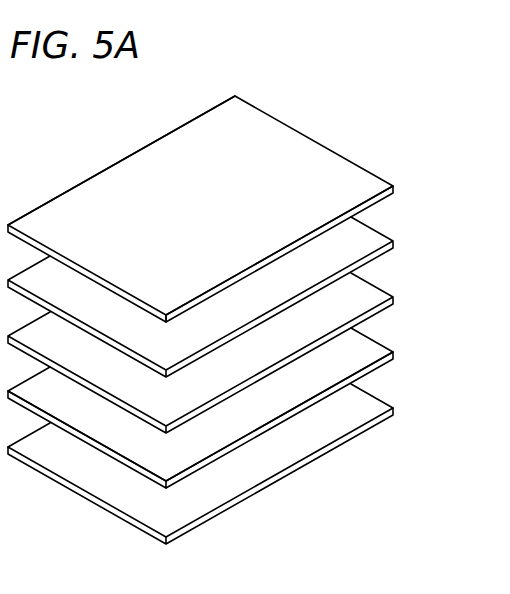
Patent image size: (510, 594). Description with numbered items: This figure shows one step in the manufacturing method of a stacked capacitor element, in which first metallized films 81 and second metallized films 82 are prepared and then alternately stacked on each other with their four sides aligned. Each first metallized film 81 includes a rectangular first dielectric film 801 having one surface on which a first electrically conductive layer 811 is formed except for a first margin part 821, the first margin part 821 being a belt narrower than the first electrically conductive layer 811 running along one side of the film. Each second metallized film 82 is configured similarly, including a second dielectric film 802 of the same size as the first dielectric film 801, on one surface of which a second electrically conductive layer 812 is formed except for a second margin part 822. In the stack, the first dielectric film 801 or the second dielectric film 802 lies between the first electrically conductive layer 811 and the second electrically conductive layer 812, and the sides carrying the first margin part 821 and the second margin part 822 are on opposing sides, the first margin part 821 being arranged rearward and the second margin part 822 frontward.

The first metallized film 81 is at (222, 310).
The second metallized film 82 is at (368, 232).
The first dielectric film 801 is at (281, 130).
The first electrically conductive layer 811 is at (110, 178).
The first margin part 821 is at (318, 153).
The second dielectric film 802 is at (106, 442).
The second margin part 822 is at (143, 467).
The second electrically conductive layer 812 is at (212, 440).